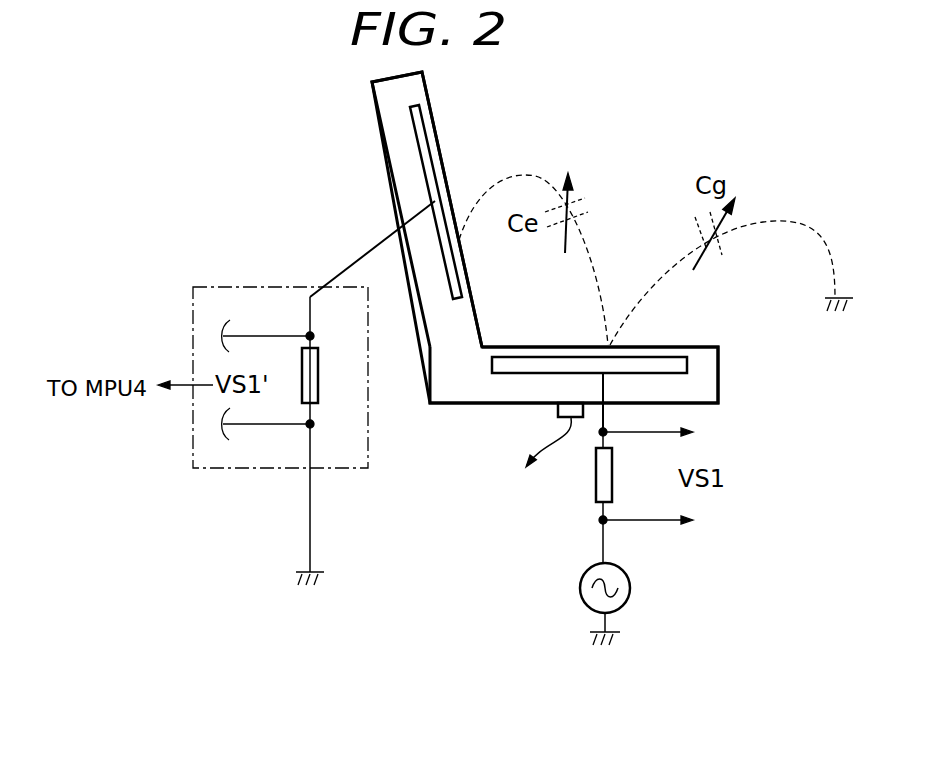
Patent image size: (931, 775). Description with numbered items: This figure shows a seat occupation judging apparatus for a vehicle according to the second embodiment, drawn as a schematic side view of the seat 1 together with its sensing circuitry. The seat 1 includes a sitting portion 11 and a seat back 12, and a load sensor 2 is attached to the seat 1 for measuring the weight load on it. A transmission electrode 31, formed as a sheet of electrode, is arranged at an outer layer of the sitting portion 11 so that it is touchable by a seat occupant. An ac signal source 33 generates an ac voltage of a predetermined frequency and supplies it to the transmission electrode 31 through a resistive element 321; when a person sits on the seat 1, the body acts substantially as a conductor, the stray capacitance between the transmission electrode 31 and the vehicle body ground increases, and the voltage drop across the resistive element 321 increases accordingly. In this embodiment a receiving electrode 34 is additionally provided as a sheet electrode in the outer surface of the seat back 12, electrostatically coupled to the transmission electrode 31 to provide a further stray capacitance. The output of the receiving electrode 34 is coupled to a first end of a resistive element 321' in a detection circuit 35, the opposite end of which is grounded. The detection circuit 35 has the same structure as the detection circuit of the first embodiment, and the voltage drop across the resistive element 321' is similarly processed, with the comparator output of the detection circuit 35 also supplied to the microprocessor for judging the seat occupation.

The seat 1 is at (742, 373).
The load sensor 2 is at (562, 405).
The sitting portion 11 is at (455, 392).
The seat back 12 is at (390, 115).
The transmission electrode 31 is at (665, 360).
The ac signal source 33 is at (630, 587).
The receiving electrode 34 is at (423, 135).
The detection circuit 35 is at (258, 285).
The resistive element 321 is at (612, 495).
The resistive element 321' is at (338, 405).